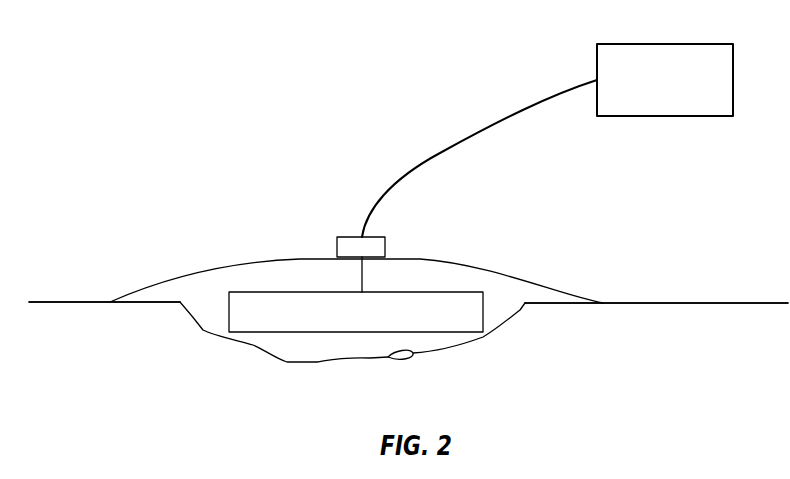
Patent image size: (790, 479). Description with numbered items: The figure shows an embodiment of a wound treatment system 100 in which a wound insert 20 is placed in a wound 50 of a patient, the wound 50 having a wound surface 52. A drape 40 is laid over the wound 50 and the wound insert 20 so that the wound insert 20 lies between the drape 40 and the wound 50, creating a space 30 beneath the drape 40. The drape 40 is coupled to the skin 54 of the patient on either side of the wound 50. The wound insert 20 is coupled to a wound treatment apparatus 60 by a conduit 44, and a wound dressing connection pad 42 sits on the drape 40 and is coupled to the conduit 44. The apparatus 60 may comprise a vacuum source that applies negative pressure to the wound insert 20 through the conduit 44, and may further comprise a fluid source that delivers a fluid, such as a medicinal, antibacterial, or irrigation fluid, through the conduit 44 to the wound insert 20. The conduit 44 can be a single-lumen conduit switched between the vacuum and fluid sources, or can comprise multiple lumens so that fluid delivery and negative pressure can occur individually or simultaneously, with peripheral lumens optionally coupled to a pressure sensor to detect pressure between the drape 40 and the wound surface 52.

The wound treatment system 100 is at (203, 107).
The wound treatment apparatus 60 is at (680, 92).
The conduit 44 is at (438, 153).
The wound dressing connection pad 42 is at (385, 237).
The drape 40 is at (478, 262).
The space 30 is at (404, 287).
The wound insert 20 is at (257, 332).
The wound surface 52 is at (405, 353).
The wound 50 is at (512, 343).
The skin 54 is at (68, 302).